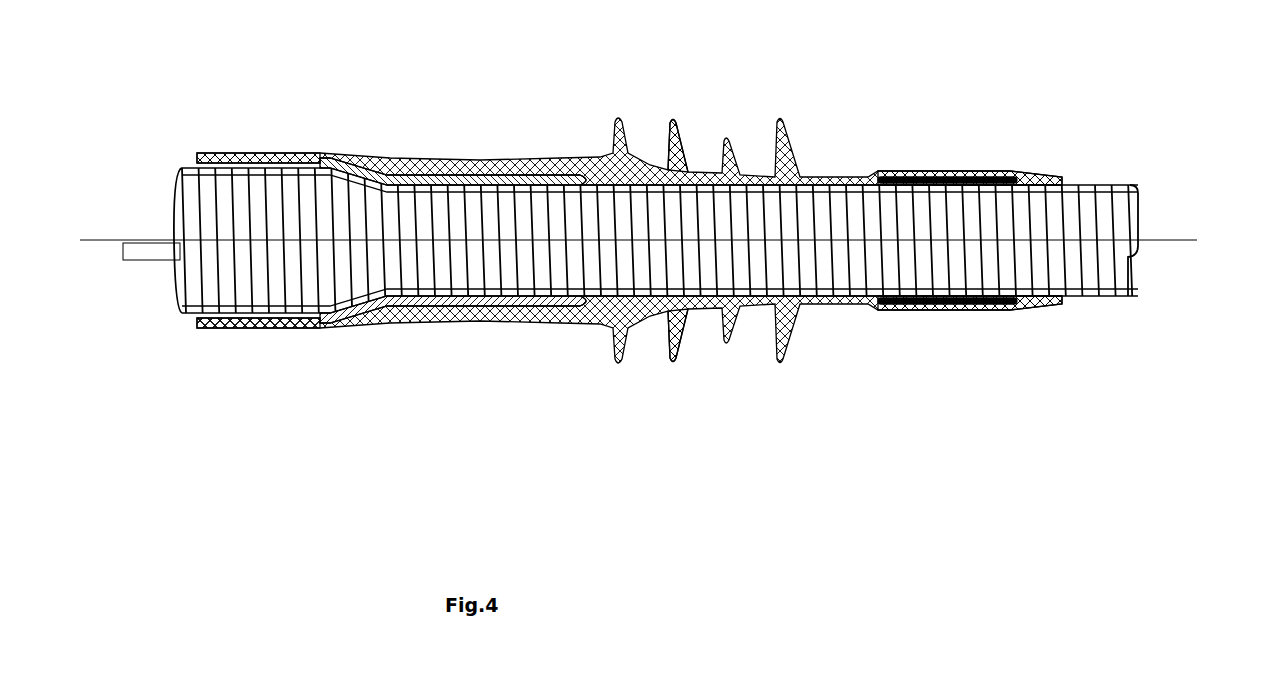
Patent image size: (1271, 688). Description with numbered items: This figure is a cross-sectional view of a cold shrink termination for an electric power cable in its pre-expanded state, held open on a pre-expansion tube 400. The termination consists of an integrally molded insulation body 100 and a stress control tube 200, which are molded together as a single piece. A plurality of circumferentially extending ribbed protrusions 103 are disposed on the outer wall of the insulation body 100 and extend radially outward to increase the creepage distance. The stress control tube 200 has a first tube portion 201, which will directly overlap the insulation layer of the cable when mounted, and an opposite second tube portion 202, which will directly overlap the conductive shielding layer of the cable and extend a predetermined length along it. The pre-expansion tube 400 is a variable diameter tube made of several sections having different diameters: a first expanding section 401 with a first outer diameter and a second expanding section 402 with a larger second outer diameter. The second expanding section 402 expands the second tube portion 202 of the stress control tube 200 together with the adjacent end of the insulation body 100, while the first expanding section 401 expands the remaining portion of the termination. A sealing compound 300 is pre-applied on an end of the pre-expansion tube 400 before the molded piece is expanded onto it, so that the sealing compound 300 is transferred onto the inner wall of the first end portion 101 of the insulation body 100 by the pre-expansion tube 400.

The insulation body 100 is at (613, 157).
The first end portion 101 is at (958, 175).
The ribbed protrusions 103 is at (678, 143).
The stress control tube 200 is at (391, 303).
The first tube portion 201 is at (453, 268).
The second tube portion 202 is at (283, 320).
The sealing compound 300 is at (1025, 175).
The pre-expansion tube 400 is at (1058, 235).
The first expanding section 401 is at (1092, 300).
The second expanding section 402 is at (179, 168).